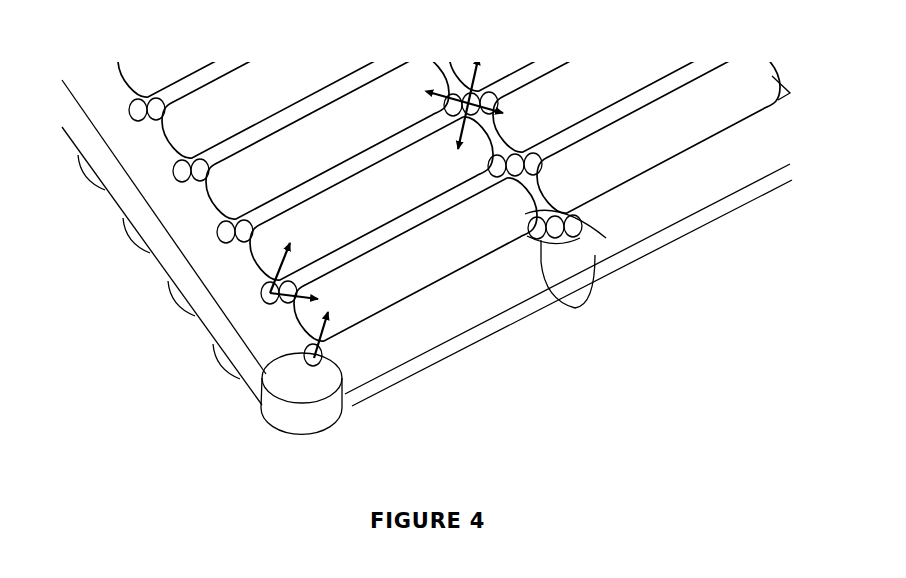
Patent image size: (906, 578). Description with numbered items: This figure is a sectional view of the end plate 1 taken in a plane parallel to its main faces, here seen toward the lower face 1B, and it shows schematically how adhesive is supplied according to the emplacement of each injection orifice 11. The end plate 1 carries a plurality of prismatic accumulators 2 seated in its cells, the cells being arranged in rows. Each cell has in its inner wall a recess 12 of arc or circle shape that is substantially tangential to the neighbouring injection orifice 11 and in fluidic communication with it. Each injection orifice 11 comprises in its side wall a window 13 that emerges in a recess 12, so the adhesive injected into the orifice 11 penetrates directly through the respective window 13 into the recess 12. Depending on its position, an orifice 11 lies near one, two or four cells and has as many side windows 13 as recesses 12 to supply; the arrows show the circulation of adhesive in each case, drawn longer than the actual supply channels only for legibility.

The lower face 1B is at (419, 228).
The end plate 1 is at (160, 255).
The accumulator 2 is at (400, 283).
The injection orifice 11 is at (550, 240).
The recess 12 is at (576, 232).
The window 13 is at (597, 262).